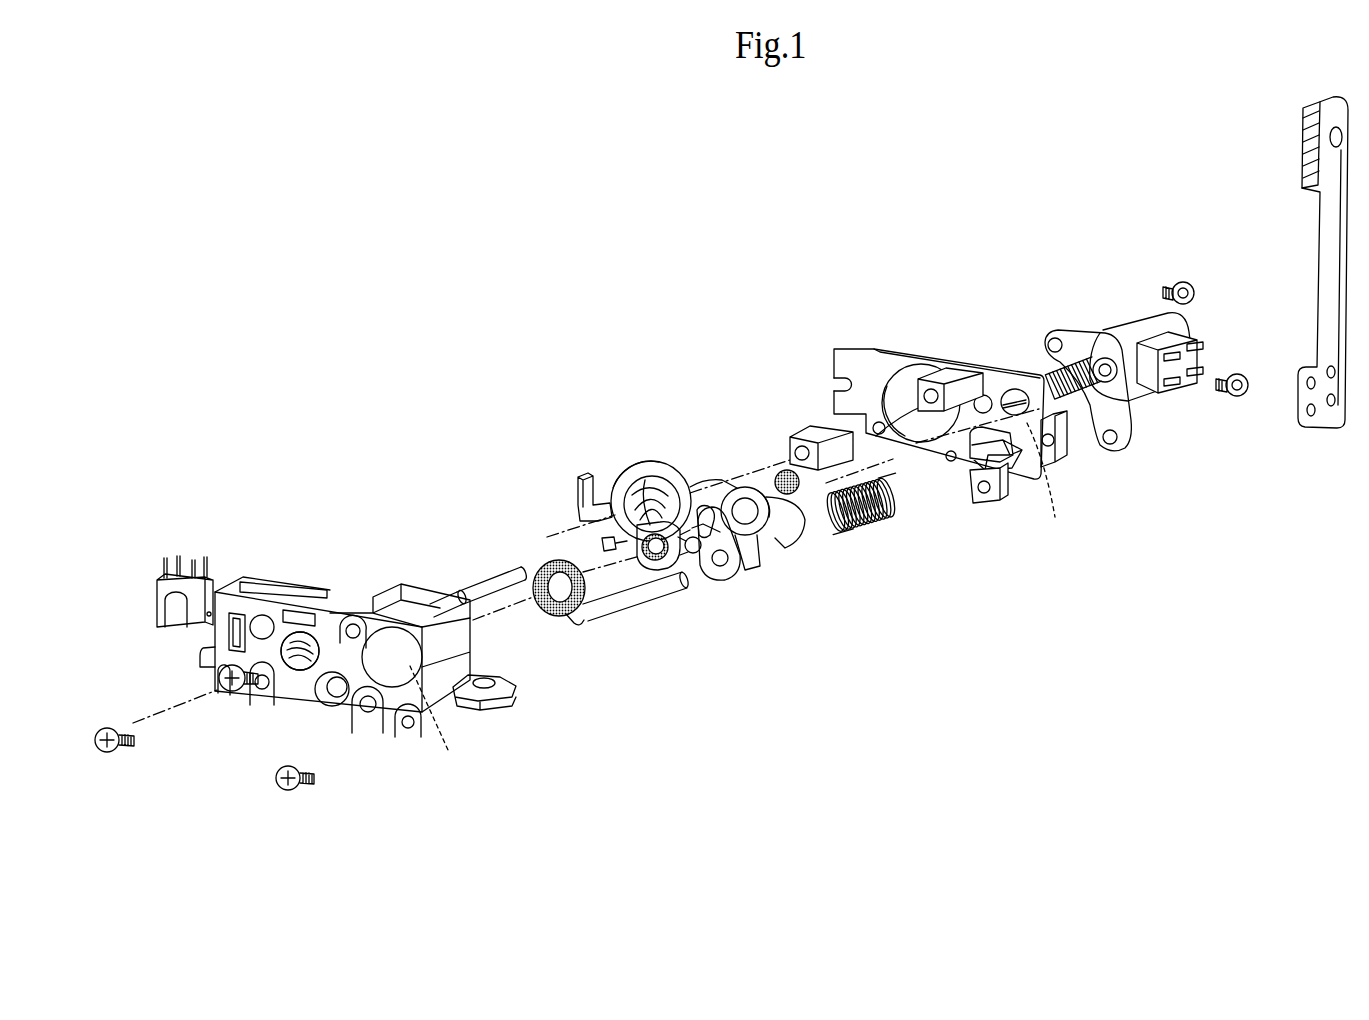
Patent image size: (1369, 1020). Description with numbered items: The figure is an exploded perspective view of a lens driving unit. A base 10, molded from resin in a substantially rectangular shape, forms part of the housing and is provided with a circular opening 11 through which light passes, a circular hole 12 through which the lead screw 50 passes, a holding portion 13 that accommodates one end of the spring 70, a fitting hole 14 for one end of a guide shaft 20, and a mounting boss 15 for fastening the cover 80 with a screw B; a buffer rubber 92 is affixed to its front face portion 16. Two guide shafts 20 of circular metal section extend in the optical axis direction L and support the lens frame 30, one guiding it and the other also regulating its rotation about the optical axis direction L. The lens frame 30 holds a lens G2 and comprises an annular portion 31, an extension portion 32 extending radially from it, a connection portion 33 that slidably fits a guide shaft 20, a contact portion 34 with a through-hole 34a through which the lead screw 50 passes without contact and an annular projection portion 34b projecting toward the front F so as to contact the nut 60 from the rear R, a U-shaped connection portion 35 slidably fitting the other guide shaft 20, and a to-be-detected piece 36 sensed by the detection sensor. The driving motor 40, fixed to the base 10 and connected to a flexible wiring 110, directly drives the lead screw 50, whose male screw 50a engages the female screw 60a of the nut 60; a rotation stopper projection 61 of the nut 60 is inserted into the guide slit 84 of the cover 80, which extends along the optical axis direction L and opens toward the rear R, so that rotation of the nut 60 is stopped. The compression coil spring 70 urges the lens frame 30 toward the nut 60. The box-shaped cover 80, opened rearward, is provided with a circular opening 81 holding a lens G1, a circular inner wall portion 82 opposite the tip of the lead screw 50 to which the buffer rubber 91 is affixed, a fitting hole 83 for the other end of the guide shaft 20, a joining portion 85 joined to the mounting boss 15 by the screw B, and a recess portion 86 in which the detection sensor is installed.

The base 10 is at (922, 416).
The circular opening 11 is at (907, 365).
The circular hole 12 is at (1012, 390).
The holding portion 13 is at (1000, 452).
The fitting hole 14 is at (876, 436).
The mounting boss 15 is at (945, 380).
The front face portion 16 is at (984, 396).
The guide shaft 20 is at (496, 578).
The lens frame 30 is at (704, 509).
The annular portion 31 is at (666, 478).
The extension portion 32 is at (692, 495).
The connection portion 33 is at (765, 555).
The contact portion 34 is at (789, 517).
The through-hole 34a is at (740, 570).
The annular projection portion 34b is at (778, 552).
The U-shaped connection portion 35 is at (604, 547).
The to-be-detected piece 36 is at (590, 472).
The driving motor 40 is at (1130, 318).
The lead screw 50 is at (1088, 363).
The male screw 50a is at (1068, 360).
The nut 60 is at (685, 567).
The female screw 60a is at (657, 562).
The rotation stopper projection 61 is at (705, 555).
The spring 70 is at (877, 522).
The cover 80 is at (336, 674).
The circular opening 81 is at (300, 668).
The circular inner wall portion 82 is at (439, 701).
The fitting hole 83 is at (255, 686).
The guide slit 84 is at (452, 598).
The joining portion 85 is at (347, 620).
The recess portion 86 is at (236, 585).
The buffer rubber 91 is at (548, 602).
The buffer rubber 92 is at (780, 472).
The flexible wiring 110 is at (1302, 268).
The screw B is at (222, 683).
The lens G1 is at (292, 662).
The lens G2 is at (637, 492).
The optical axis direction L is at (547, 537).
The front F is at (693, 746).
The rear R is at (1013, 623).